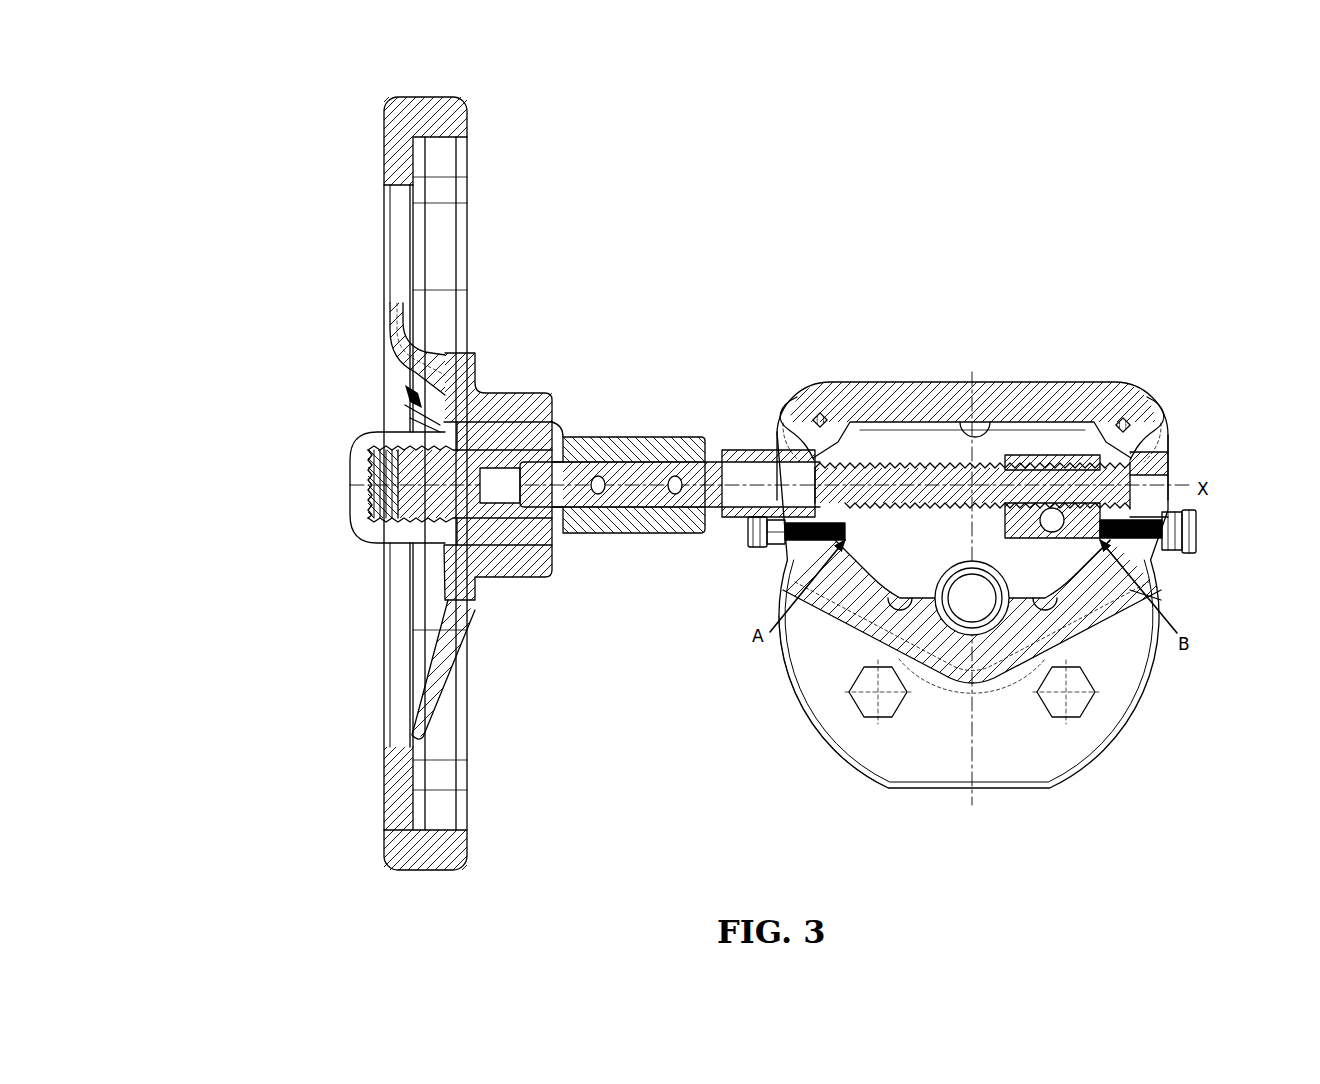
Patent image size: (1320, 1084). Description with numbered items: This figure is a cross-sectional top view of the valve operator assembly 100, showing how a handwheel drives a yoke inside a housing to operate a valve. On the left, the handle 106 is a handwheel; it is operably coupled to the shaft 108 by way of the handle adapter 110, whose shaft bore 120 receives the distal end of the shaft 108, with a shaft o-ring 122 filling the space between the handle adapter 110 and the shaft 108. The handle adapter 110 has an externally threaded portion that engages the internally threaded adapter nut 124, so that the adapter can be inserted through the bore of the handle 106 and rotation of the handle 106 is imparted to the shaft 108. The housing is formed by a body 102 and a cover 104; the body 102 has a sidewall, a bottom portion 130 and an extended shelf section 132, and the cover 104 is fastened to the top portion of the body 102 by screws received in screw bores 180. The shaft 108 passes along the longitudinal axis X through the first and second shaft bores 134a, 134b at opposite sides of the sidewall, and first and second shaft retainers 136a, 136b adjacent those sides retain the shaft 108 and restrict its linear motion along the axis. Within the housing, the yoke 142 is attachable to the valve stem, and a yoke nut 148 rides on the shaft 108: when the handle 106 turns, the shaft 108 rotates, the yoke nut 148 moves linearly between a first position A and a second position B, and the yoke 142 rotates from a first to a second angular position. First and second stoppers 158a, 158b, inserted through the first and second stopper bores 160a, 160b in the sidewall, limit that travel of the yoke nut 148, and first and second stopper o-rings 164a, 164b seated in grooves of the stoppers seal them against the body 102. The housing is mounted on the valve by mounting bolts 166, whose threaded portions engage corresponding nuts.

The valve operator assembly 100 is at (220, 100).
The body 102 is at (1170, 700).
The cover 104 is at (913, 352).
The handle 106 is at (365, 196).
The shaft 108 is at (975, 424).
The handle adapter 110 is at (608, 430).
The shaft bore 120 is at (632, 457).
The shaft o-ring 122 is at (537, 438).
The adapter nut 124 is at (355, 470).
The bottom portion 130 is at (926, 456).
The extended shelf section 132 is at (853, 750).
The first shaft bore 134a is at (745, 465).
The second shaft bore 134b is at (1166, 480).
The first shaft retainer 136a is at (790, 455).
The second shaft retainer 136b is at (1160, 425).
The yoke 142 is at (940, 572).
The yoke nut 148 is at (1060, 455).
The first stopper 158a is at (776, 590).
The second stopper 158b is at (1155, 600).
The first stopper bore 160a is at (750, 530).
The second stopper bore 160b is at (1197, 532).
The first stopper o-ring 164a is at (776, 550).
The second stopper o-ring 164b is at (1170, 548).
The mounting bolts 166 is at (858, 692).
The screw bores 180 is at (820, 418).